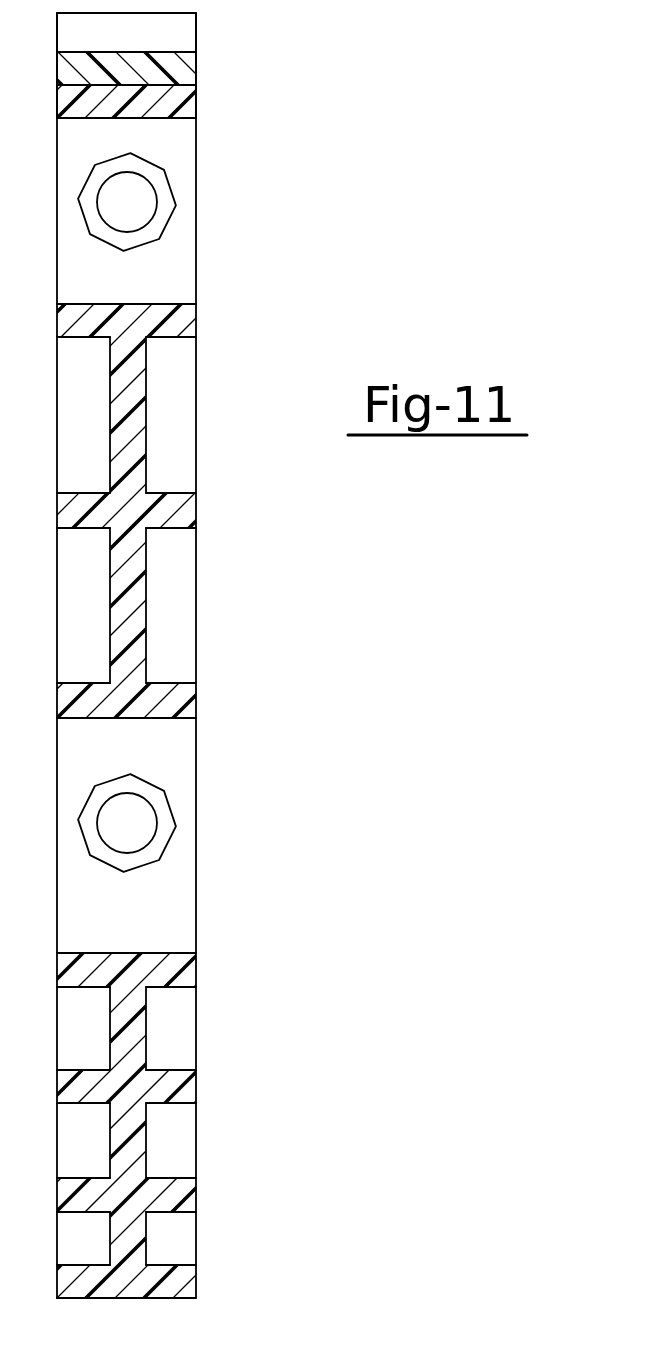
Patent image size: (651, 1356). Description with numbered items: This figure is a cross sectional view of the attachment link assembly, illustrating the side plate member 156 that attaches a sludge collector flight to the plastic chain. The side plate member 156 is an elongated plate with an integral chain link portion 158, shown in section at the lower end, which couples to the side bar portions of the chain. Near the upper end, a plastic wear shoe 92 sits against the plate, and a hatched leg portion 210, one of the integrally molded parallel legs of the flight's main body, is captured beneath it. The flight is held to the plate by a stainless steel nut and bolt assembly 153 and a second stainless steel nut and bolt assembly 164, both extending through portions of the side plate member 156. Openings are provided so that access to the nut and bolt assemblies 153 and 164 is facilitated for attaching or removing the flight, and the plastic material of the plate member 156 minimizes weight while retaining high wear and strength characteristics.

The wear shoe 92 is at (175, 33).
The leg portion 210 is at (173, 67).
The nut and bolt assembly 153 is at (162, 198).
The side plate member 156 is at (232, 588).
The second nut and bolt assembly 164 is at (167, 830).
The chain link portion 158 is at (170, 1090).